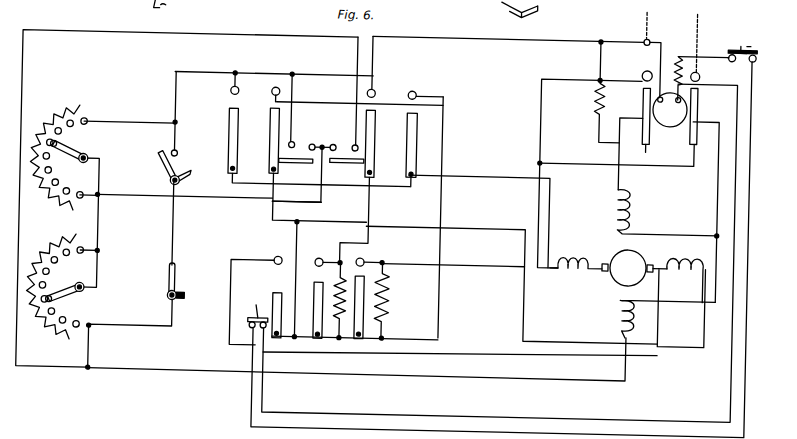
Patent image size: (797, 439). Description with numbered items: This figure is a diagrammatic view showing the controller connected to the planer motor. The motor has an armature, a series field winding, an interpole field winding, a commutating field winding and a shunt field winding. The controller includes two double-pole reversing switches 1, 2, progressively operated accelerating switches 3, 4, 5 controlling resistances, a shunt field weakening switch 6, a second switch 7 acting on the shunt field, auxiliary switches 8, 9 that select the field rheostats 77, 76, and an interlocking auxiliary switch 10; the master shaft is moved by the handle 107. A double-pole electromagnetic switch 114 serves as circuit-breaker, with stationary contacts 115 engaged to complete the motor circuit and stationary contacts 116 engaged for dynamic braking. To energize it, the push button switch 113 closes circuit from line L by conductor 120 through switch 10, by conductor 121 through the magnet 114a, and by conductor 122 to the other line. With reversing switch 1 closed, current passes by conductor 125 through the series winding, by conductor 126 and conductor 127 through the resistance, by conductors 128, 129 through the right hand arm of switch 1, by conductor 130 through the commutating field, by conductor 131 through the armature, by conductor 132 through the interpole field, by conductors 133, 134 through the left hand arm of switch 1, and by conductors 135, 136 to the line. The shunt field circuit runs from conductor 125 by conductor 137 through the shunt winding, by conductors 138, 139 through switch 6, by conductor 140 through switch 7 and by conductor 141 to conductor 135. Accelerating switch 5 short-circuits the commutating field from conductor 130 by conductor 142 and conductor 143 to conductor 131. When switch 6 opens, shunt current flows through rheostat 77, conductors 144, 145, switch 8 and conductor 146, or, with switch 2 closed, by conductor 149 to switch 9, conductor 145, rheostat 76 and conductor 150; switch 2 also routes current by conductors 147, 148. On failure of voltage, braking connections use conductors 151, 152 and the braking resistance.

The double-pole reversing switch 1 is at (276, 128).
The double-pole reversing switch 2 is at (381, 111).
The accelerating switch 3 is at (366, 327).
The accelerating switch 4 is at (320, 282).
The accelerating switch 5 is at (280, 291).
The shunt field weakening switch 6 is at (168, 281).
The second switch 7 is at (161, 168).
The auxiliary switch 8 is at (297, 157).
The auxiliary switch 9 is at (340, 157).
The auxiliary switch 10 is at (258, 309).
The rheostat 76 is at (76, 166).
The rheostat 77 is at (72, 307).
The handle 107 is at (172, 6).
The push button switch 113 is at (733, 46).
The double-pole electromagnetic switch 114 is at (650, 128).
The magnet 114a is at (671, 110).
The stationary contacts 115 is at (641, 56).
The stationary contacts 116 is at (645, 145).
The conductor 120 is at (749, 170).
The conductor 121 is at (405, 417).
The conductor 122 is at (647, 37).
The conductor 125 is at (717, 177).
The conductor 126 is at (618, 178).
The conductor 127 is at (538, 133).
The conductor 128 is at (447, 295).
The conductor 129 is at (316, 104).
The conductor 130 is at (492, 212).
The conductor 131 is at (659, 258).
The conductor 132 is at (597, 259).
The conductor 133 is at (491, 179).
The conductor 134 is at (327, 196).
The conductor 135 is at (329, 60).
The conductor 136 is at (493, 39).
The conductor 137 is at (719, 251).
The conductor 138 is at (497, 364).
The conductor 139 is at (94, 356).
The conductor 140 is at (175, 240).
The conductor 141 is at (177, 93).
The conductor 142 is at (297, 245).
The conductor 143 is at (232, 306).
The conductor 144 is at (100, 229).
The conductor 145 is at (250, 203).
The conductor 146 is at (292, 116).
The conductor 147 is at (308, 354).
The conductor 148 is at (371, 209).
The conductor 149 is at (48, 376).
The conductor 150 is at (148, 118).
The conductor 151 is at (574, 149).
The conductor 152 is at (597, 126).